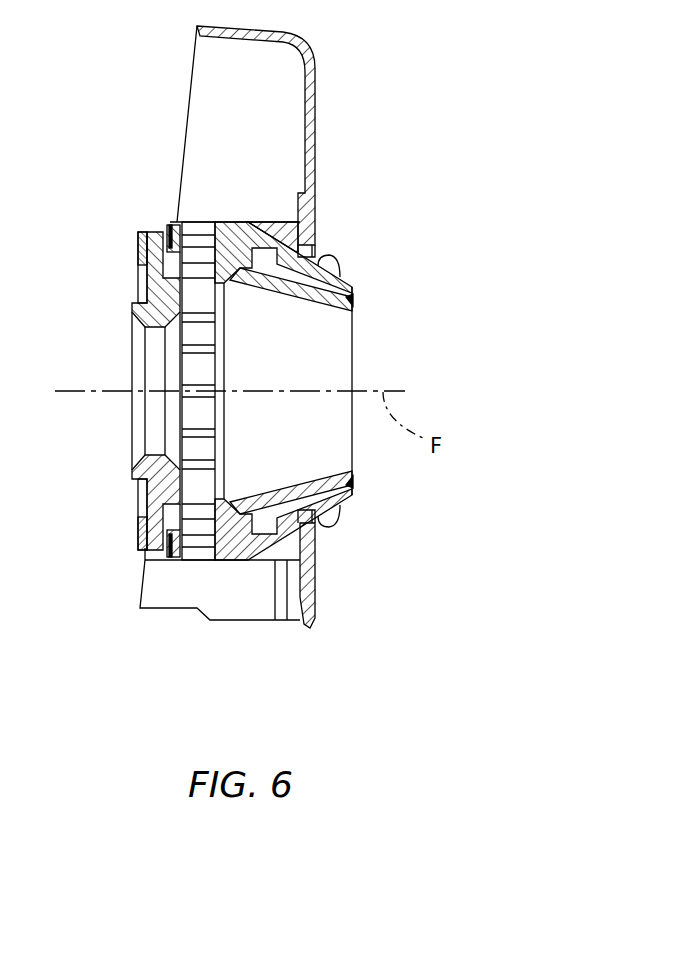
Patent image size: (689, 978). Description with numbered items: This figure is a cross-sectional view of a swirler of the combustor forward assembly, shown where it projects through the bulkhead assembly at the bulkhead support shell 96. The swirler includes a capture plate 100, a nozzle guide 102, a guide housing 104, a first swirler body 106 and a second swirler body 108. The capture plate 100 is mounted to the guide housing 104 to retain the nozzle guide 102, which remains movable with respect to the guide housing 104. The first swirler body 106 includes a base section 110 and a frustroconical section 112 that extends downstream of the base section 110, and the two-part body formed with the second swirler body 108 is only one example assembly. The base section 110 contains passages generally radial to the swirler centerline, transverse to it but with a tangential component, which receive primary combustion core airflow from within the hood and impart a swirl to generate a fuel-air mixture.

The bulkhead support shell 96 is at (318, 64).
The capture plate 100 is at (141, 264).
The nozzle guide 102 is at (165, 227).
The guide housing 104 is at (173, 226).
The first swirler body 106 is at (356, 297).
The second swirler body 108 is at (340, 262).
The base section 110 is at (228, 565).
The frustroconical section 112 is at (353, 470).